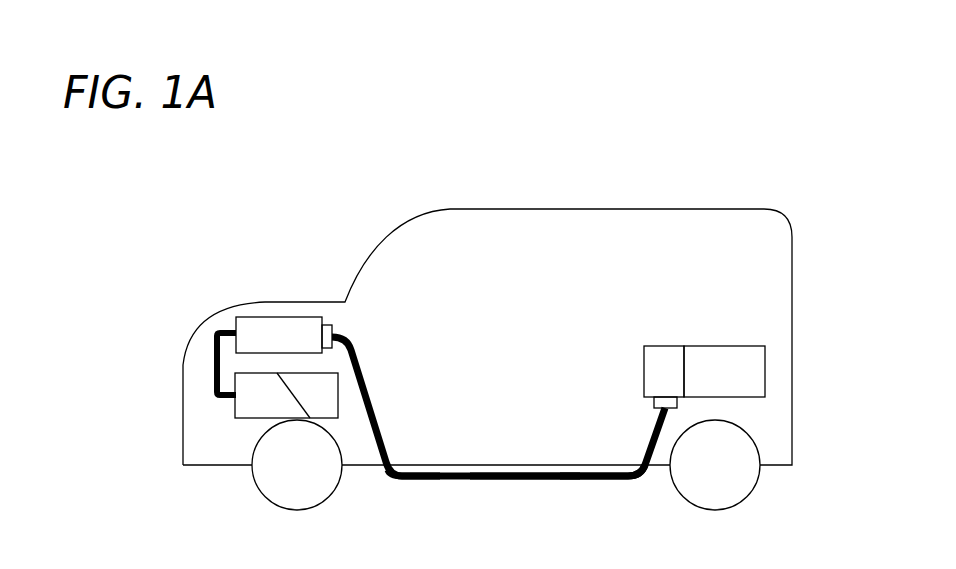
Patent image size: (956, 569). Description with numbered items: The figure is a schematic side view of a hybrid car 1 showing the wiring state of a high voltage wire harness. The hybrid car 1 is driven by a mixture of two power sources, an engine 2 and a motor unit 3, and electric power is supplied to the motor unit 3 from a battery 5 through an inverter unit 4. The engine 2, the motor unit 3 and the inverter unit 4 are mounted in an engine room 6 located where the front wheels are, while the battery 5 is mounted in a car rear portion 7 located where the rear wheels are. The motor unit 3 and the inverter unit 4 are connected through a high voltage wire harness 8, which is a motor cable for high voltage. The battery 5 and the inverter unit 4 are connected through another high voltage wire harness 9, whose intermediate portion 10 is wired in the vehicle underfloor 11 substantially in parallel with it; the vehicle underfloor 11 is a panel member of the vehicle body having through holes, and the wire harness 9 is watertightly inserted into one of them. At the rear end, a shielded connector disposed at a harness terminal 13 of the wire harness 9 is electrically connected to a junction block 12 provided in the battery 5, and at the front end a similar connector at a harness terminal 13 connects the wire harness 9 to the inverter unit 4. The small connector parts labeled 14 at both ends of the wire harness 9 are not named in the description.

The hybrid car 1 is at (540, 196).
The engine 2 is at (333, 408).
The motor unit 3 is at (245, 405).
The inverter unit 4 is at (258, 327).
The battery 5 is at (730, 357).
The engine room 6 is at (198, 438).
The car rear portion 7 is at (773, 438).
The high voltage wire harness 8 is at (215, 372).
The high voltage wire harness 9 is at (422, 485).
The intermediate portion 10 is at (527, 483).
The vehicle underfloor 11 is at (588, 470).
The junction block 12 is at (665, 357).
The harness terminal 13 is at (345, 338).
The connector 14 is at (330, 323).